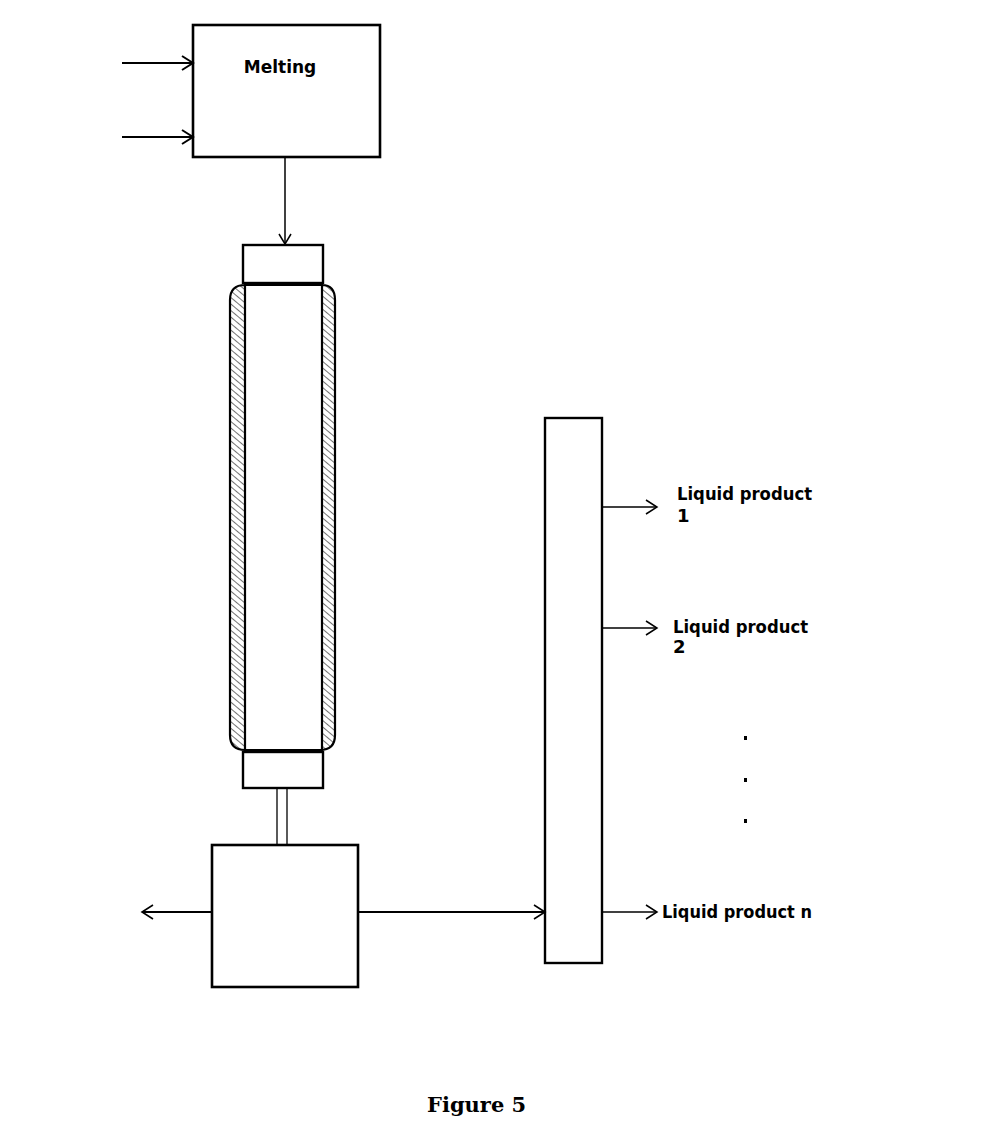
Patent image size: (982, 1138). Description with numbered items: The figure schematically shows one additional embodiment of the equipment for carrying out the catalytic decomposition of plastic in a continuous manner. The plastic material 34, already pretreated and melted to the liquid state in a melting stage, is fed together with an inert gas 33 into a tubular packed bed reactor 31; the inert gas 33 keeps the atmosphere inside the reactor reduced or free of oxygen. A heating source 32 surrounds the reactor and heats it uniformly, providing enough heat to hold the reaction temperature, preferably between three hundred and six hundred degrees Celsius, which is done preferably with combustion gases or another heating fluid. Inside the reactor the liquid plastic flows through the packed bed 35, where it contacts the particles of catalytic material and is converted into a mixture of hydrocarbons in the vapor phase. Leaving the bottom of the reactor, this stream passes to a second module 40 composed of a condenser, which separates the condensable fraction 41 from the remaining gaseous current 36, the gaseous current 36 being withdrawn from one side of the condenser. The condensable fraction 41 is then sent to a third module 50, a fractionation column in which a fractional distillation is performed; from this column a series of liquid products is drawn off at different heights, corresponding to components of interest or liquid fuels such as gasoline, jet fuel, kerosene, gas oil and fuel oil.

The tubular packed bed reactor 31 is at (290, 534).
The heating source 32 is at (342, 628).
The inert gas 33 is at (135, 137).
The plastic material 34 is at (135, 63).
The packed bed 35 is at (330, 486).
The gaseous current 36 is at (149, 912).
The second module 40 is at (285, 916).
The condensable fraction 41 is at (451, 895).
The third module 50 is at (552, 553).